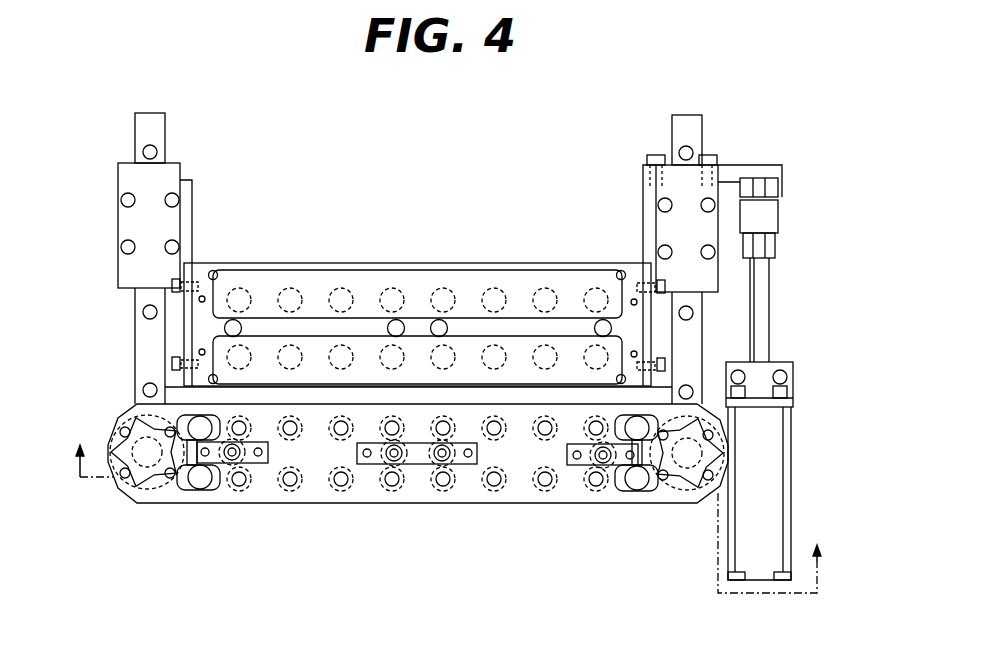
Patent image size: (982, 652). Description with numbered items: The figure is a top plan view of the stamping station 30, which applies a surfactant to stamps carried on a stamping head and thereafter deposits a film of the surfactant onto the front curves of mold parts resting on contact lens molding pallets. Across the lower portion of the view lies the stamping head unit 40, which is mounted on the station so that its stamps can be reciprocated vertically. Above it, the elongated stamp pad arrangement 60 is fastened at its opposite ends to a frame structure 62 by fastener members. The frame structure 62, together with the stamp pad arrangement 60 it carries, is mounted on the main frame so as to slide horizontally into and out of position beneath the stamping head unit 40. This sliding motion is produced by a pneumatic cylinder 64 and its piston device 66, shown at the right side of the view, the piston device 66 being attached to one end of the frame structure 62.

The stamping station 30 is at (457, 200).
The stamping head unit 40 is at (255, 505).
The stamp pad arrangement 60 is at (280, 263).
The frame structure 62 is at (183, 312).
The pneumatic cylinder 64 is at (790, 467).
The piston device 66 is at (770, 312).